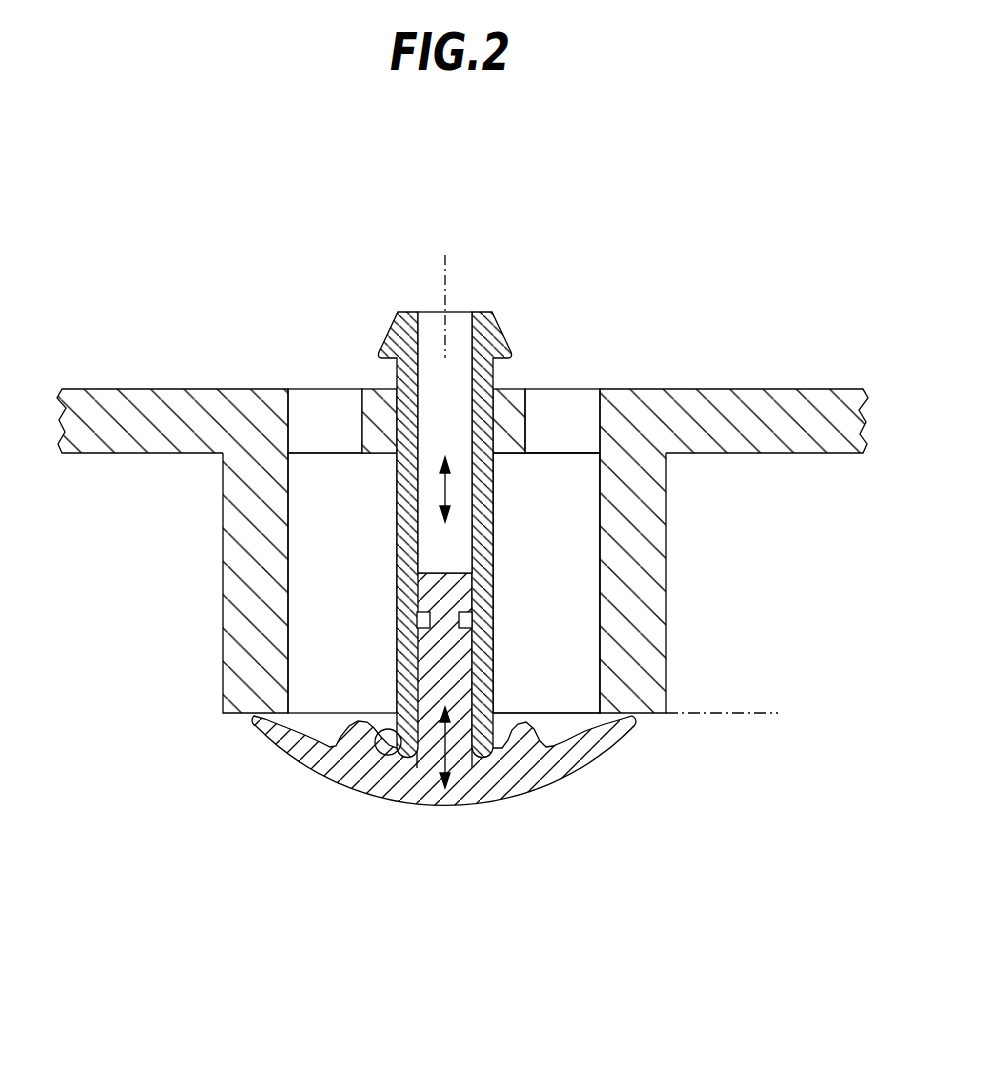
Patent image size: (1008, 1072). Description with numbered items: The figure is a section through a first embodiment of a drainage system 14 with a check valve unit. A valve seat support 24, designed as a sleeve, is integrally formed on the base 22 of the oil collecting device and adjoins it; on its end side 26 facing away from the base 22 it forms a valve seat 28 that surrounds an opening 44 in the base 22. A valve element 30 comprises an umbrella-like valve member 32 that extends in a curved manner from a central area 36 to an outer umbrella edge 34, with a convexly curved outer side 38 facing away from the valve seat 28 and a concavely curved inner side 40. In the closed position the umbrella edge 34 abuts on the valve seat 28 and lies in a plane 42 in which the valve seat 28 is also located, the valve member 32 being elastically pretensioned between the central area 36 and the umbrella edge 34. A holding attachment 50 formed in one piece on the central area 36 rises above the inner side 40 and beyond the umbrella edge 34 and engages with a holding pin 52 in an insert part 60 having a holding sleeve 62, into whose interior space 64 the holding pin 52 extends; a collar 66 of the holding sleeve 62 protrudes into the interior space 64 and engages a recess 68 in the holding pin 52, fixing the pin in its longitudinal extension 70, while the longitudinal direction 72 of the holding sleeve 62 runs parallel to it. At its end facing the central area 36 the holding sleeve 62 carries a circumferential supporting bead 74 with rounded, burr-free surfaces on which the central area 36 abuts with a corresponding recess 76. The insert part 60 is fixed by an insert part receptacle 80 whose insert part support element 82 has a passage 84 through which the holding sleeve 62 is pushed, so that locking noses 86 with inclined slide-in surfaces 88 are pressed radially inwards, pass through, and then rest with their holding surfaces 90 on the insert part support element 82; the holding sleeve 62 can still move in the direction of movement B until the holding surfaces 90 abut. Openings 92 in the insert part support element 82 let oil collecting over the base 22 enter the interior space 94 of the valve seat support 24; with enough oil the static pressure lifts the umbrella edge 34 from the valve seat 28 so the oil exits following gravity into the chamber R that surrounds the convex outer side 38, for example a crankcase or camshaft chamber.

The drainage system 14 is at (629, 300).
The base 22 is at (772, 440).
The valve seat support 24 is at (656, 580).
The end side 26 is at (233, 714).
The valve seat 28 is at (638, 722).
The valve element 30 is at (595, 771).
The valve member 32 is at (497, 798).
The umbrella edge 34 is at (252, 716).
The central area 36 is at (435, 800).
The outer side 38 is at (347, 783).
The inner side 40 is at (578, 720).
The plane 42 is at (760, 716).
The opening 44 is at (297, 735).
The holding attachment 50 is at (447, 651).
The holding pin 52 is at (460, 660).
The insert part 60 is at (399, 556).
The holding sleeve 62 is at (406, 640).
The interior space 64 is at (423, 652).
The collar 66 is at (467, 616).
The recess 68 is at (418, 619).
The longitudinal extension 70 is at (450, 790).
The longitudinal direction 72 is at (444, 273).
The supporting bead 74 is at (518, 732).
The recess 76 is at (389, 731).
The insert part receptacle 80 is at (512, 388).
The insert part support element 82 is at (379, 445).
The passage 84 is at (398, 415).
The locking noses 86 is at (389, 346).
The inclined slide-in surfaces 88 is at (500, 337).
The holding surfaces 90 is at (394, 360).
The openings 92 is at (583, 407).
The interior space 94 is at (596, 575).
The direction of movement B is at (452, 490).
The chamber R is at (456, 922).